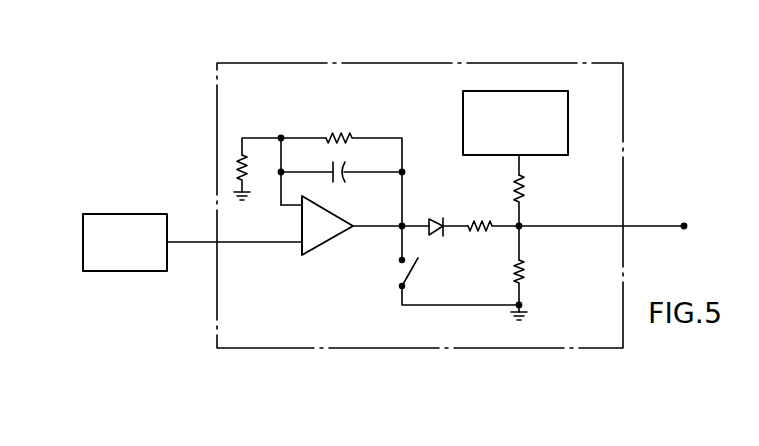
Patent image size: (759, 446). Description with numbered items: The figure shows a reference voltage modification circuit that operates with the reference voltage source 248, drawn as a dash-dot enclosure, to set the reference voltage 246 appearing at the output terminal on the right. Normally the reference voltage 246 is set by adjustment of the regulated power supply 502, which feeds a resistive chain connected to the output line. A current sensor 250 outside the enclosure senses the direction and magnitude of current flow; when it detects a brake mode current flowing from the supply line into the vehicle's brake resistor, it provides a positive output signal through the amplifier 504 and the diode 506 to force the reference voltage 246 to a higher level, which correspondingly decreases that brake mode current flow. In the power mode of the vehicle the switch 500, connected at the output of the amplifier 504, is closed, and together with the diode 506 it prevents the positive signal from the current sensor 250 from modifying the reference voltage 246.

The reference voltage 246 is at (684, 224).
The reference voltage source 248 is at (623, 95).
The current sensor 250 is at (124, 212).
The switch 500 is at (396, 278).
The regulated power supply 502 is at (463, 100).
The amplifier 504 is at (335, 215).
The diode 506 is at (436, 217).